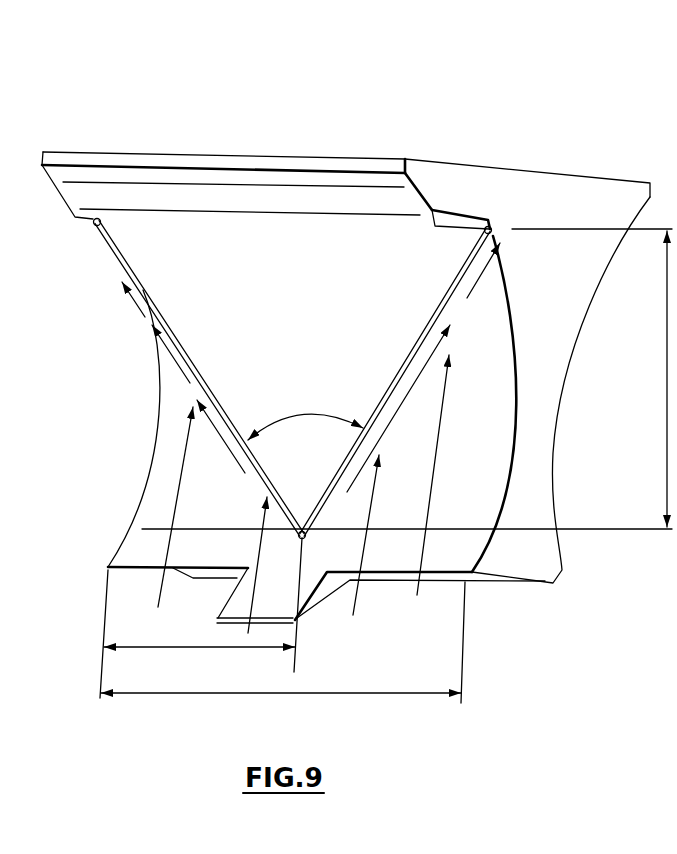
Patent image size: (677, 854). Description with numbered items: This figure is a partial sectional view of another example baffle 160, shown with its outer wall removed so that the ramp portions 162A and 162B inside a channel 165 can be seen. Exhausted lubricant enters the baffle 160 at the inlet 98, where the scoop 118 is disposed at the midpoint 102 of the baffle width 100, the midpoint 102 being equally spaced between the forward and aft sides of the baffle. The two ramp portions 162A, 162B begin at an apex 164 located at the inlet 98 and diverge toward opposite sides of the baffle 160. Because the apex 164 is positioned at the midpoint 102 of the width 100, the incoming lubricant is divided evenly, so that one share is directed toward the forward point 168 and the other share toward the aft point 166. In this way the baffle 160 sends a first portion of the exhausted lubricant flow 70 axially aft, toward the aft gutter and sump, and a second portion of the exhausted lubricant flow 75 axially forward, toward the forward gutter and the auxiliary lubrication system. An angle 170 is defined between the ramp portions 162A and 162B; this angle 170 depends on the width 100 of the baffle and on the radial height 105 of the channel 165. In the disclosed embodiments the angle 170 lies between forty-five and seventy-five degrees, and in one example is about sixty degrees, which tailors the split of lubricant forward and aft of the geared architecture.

The baffle 160 is at (510, 95).
The aft point 166 is at (492, 228).
The forward point 168 is at (94, 229).
The apex 164 is at (309, 542).
The ramp portion 162A is at (203, 386).
The ramp portion 162B is at (450, 304).
The angle 170 is at (301, 417).
The second portion of exhausted lubricant flow 75 is at (167, 495).
The inlet 98 is at (220, 512).
The channel 165 is at (250, 530).
The scoop 118 is at (243, 604).
The first portion of exhausted lubricant flow 70 is at (395, 502).
The radial height 105 is at (667, 328).
The midpoint 102 is at (137, 648).
The width 100 is at (203, 694).